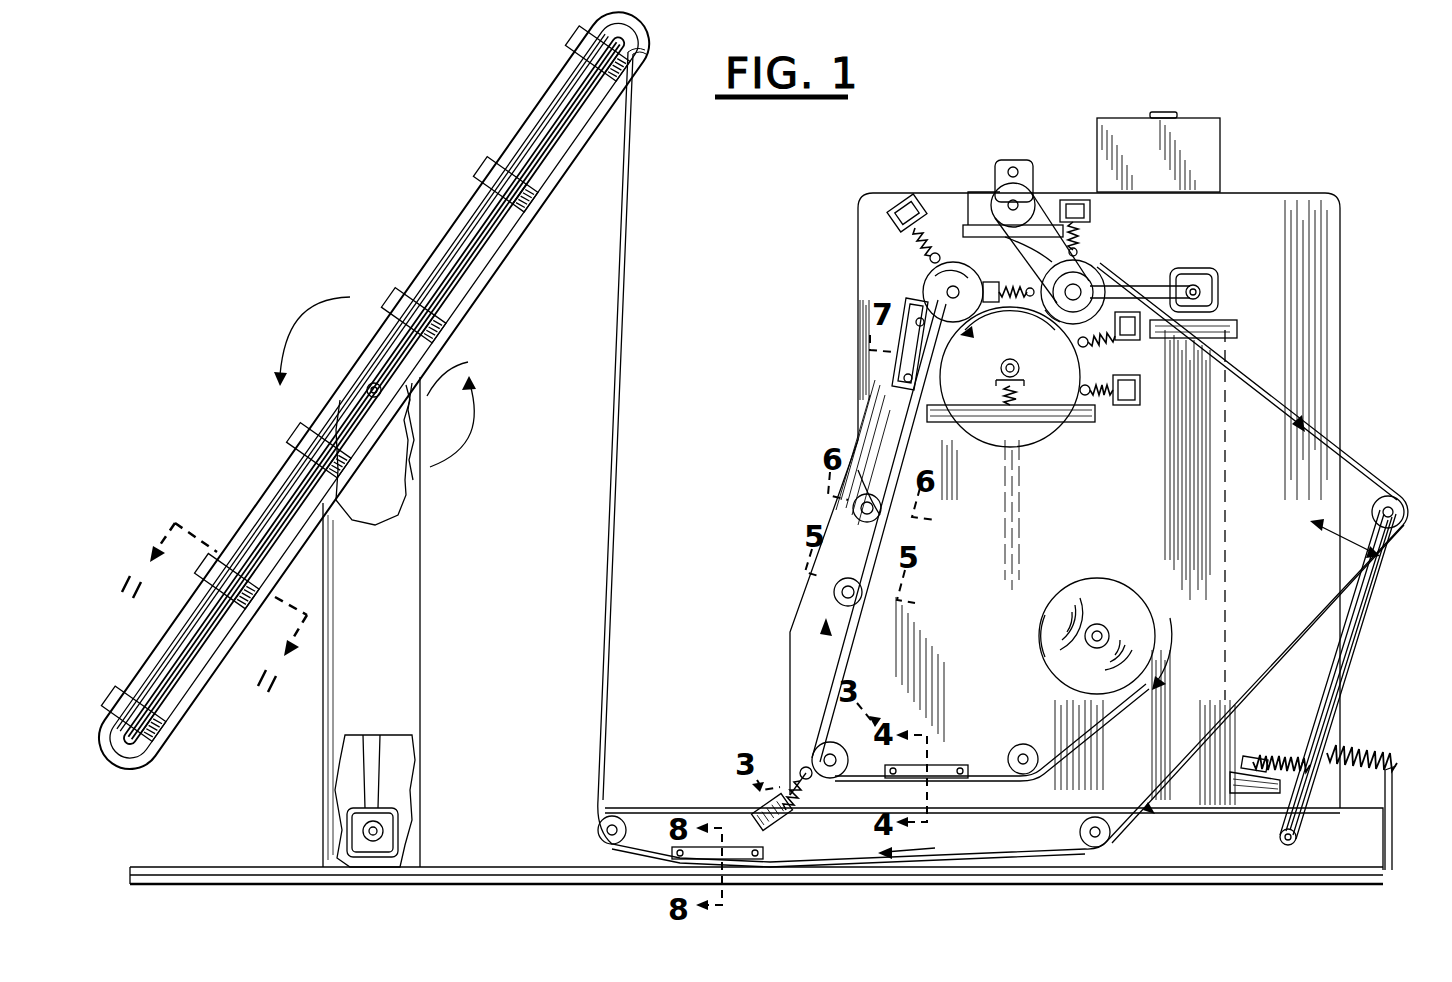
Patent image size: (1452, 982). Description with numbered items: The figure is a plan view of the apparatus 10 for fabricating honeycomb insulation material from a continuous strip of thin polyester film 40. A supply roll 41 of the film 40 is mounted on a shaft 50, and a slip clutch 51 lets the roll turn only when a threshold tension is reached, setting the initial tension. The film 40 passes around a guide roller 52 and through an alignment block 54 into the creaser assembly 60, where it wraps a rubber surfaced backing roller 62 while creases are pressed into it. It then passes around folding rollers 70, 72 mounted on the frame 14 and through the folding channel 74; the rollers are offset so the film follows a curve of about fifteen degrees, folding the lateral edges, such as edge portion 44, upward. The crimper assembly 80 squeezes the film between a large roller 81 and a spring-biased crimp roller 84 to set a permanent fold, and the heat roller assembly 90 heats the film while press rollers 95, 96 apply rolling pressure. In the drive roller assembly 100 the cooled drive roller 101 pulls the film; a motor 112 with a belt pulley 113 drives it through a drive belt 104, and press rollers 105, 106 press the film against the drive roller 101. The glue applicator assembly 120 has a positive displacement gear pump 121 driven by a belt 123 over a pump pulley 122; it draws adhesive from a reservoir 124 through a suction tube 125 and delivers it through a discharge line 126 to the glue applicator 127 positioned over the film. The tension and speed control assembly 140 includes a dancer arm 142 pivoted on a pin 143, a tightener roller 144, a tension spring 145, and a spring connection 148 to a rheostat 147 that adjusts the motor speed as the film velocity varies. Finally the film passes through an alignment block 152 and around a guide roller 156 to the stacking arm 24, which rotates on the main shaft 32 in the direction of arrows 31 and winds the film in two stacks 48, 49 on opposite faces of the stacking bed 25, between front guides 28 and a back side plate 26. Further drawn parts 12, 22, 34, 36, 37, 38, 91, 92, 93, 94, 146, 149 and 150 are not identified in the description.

The apparatus 10 is at (1282, 105).
The base plate 12 is at (545, 866).
The frame 14 is at (1342, 287).
The frame post 22 is at (422, 525).
The stacking arm 24 is at (284, 458).
The stacking bed 25 is at (462, 302).
The back side plate 26 is at (507, 262).
The front guides 28 is at (540, 196).
The arrows 31 is at (305, 326).
The main shaft 32 is at (366, 392).
The arrow 34 is at (462, 371).
The mounting block 36 is at (400, 810).
The pivot pin 37 is at (383, 831).
The bracket 38 is at (414, 472).
The film strip 40 is at (622, 310).
The supply roll 41 is at (1040, 655).
The lateral edge portion 44 is at (853, 508).
The stack 48 is at (498, 165).
The stack 49 is at (560, 160).
The shaft 50 is at (1088, 634).
The slip clutch 51 is at (1085, 636).
The guide roller 52 is at (1003, 775).
The alignment block 54 is at (946, 780).
The creaser assembly 60 is at (810, 750).
The backing roller 62 is at (835, 745).
The folding roller 70 is at (834, 594).
The folding roller 72 is at (870, 468).
The folding channel 74 is at (892, 370).
The crimper assembly 80 is at (922, 280).
The large roller 81 is at (946, 292).
The crimp roller 84 is at (920, 264).
The heat roller assembly 90 is at (1035, 430).
The drum hub 91 is at (1003, 378).
The bracket 92 is at (996, 380).
The spring 93 is at (1016, 396).
The bar 94 is at (1080, 424).
The press roller 95 is at (1090, 395).
The press roller 96 is at (1090, 346).
The drive roller assembly 100 is at (1102, 258).
The drive roller 101 is at (1098, 278).
The drive belt 104 is at (1160, 288).
The press roller 105 is at (1008, 280).
The press roller 106 is at (1090, 236).
The motor 112 is at (1220, 282).
The belt pulley 113 is at (1205, 292).
The glue applicator assembly 120 is at (990, 178).
The positive displacement gear pump 121 is at (1020, 160).
The pump pulley 122 is at (988, 214).
The belt 123 is at (1042, 228).
The reservoir 124 is at (1222, 156).
The suction tube 125 is at (1035, 210).
The discharge line 126 is at (988, 180).
The glue applicator 127 is at (1027, 247).
The tension and speed control assembly 140 is at (1358, 677).
The dancer arm 142 is at (1358, 632).
The pin 143 is at (1290, 846).
The tightener roller 144 is at (1388, 498).
The tension spring 145 is at (1372, 762).
The bracket 146 is at (1395, 780).
The rheostat 147 is at (1258, 758).
The spring connection 148 is at (1305, 755).
The belt 149 is at (1228, 470).
The roller 150 is at (1080, 850).
The alignment block 152 is at (742, 860).
The guide roller 156 is at (615, 816).